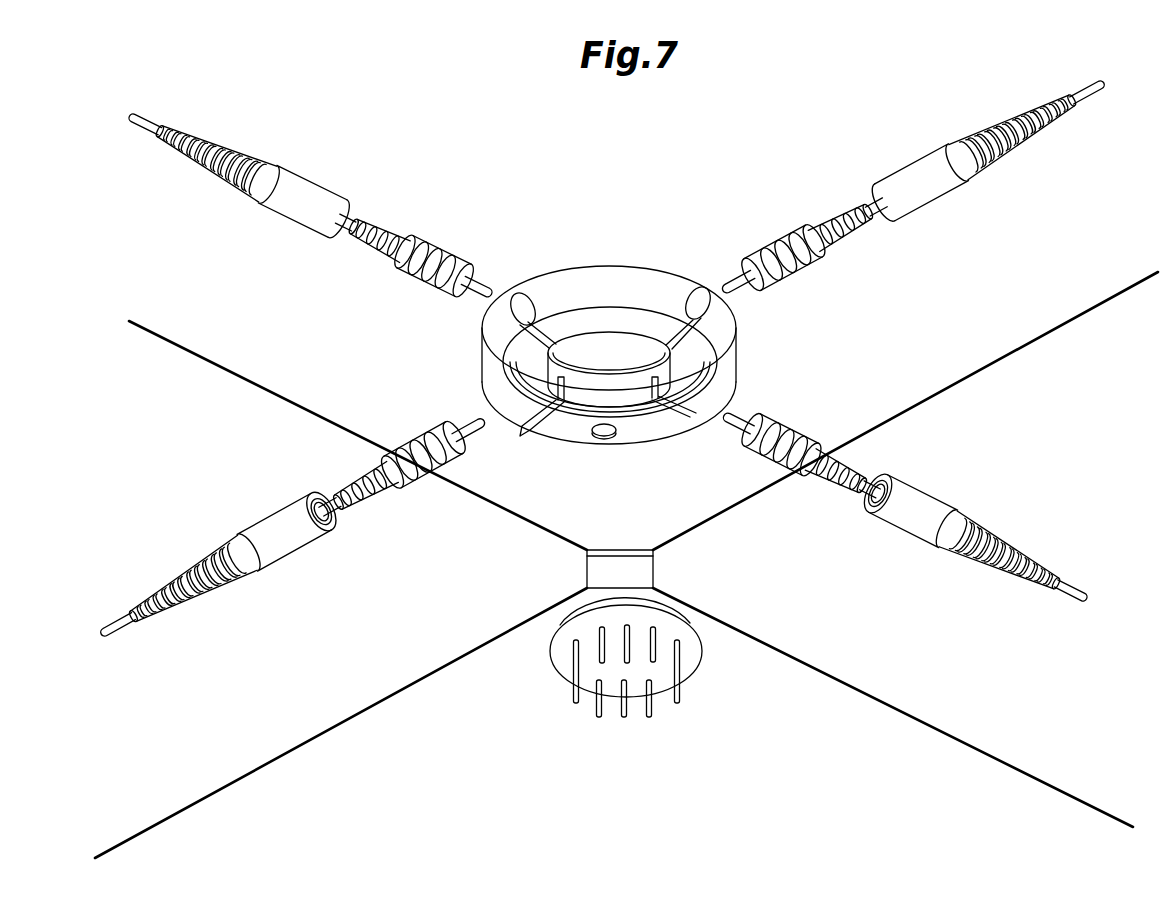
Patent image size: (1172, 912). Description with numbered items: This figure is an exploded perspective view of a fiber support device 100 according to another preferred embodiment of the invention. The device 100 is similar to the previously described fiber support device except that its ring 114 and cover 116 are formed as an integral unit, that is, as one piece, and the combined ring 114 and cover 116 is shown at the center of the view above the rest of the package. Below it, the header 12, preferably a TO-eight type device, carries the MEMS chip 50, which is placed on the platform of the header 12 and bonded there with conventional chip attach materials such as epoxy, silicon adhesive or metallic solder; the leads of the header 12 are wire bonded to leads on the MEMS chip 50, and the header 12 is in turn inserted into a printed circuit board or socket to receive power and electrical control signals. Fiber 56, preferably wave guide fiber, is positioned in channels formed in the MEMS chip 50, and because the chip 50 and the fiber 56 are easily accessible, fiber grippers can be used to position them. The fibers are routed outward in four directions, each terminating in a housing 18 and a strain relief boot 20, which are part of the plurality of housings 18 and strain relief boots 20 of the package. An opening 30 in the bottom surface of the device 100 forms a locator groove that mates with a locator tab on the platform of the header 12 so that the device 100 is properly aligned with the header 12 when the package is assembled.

The fiber support device 100 is at (663, 300).
The ring 114 is at (737, 346).
The cover 116 is at (618, 367).
The housing 18 is at (781, 420).
The strain relief boot 20 is at (932, 500).
The opening 30 is at (527, 438).
The fiber 56 is at (716, 510).
The MEMS chip 50 is at (655, 573).
The header 12 is at (677, 673).